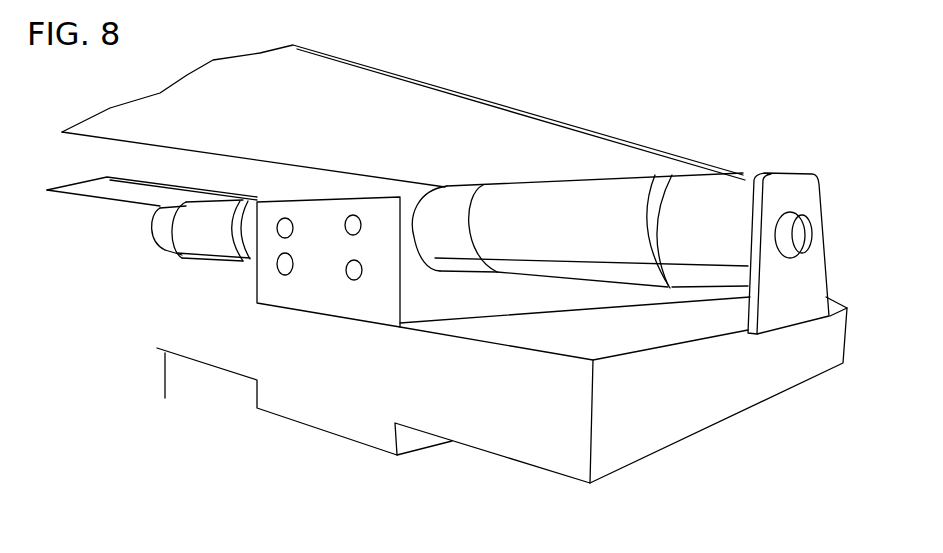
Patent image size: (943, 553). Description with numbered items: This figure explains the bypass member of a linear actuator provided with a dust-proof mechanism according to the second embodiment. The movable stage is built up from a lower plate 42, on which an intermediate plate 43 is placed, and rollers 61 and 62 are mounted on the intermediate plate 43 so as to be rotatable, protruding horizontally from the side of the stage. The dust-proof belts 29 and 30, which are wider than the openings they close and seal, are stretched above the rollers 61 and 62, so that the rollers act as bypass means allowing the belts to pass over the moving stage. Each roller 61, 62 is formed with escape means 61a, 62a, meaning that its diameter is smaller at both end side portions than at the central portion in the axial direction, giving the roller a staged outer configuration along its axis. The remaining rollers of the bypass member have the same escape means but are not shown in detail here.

The dust-proof belt 29 is at (567, 143).
The dust-proof belt 30 is at (103, 194).
The lower plate 42 is at (685, 408).
The intermediate plate 43 is at (288, 292).
The roller 61 is at (630, 193).
The escape means 61a is at (743, 193).
The roller 62 is at (197, 235).
The escape means 62a is at (163, 238).